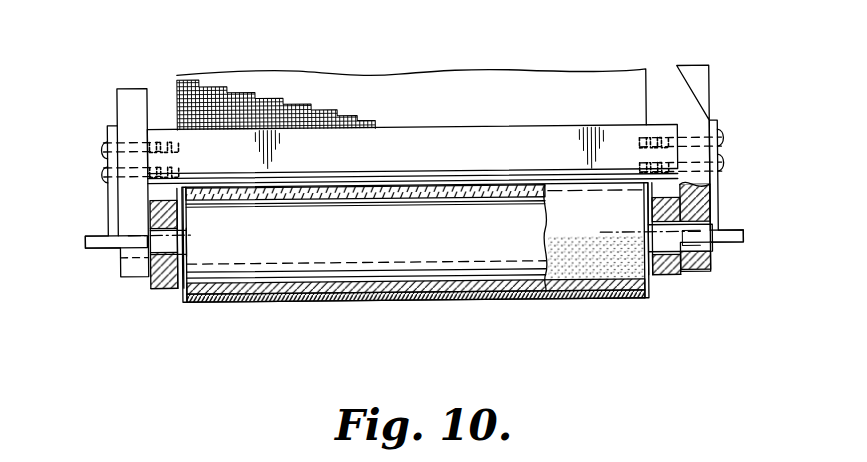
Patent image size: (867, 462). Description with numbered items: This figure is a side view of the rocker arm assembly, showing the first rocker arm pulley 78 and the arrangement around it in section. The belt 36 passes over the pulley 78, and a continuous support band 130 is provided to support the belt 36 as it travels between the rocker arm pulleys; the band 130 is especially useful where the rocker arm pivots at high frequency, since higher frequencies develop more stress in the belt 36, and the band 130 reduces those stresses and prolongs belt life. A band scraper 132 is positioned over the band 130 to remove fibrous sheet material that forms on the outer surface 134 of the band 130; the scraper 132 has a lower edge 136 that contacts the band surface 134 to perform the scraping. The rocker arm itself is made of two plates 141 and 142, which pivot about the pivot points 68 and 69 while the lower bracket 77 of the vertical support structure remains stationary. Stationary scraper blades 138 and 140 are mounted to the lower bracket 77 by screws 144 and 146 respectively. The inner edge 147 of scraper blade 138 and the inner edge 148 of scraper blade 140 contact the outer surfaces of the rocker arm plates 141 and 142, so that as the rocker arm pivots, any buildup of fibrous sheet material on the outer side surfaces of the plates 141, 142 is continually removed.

The belt 36 is at (300, 86).
The lower bracket 77 is at (134, 104).
The band scraper 132 is at (563, 121).
The outer surface 134 is at (420, 188).
The lower edge 136 is at (364, 186).
The continuous support band 130 is at (346, 302).
The first rocker arm pulley 78 is at (494, 243).
The screw 146 is at (106, 172).
The screw 144 is at (722, 166).
The pivot point 68 is at (132, 230).
The pivot point 69 is at (672, 276).
The inner edge 148 is at (180, 230).
The inner edge 147 is at (650, 232).
The stationary scraper blade 140 is at (100, 252).
The stationary scraper blade 138 is at (735, 244).
The rocker arm plate 142 is at (154, 288).
The rocker arm plate 141 is at (678, 278).